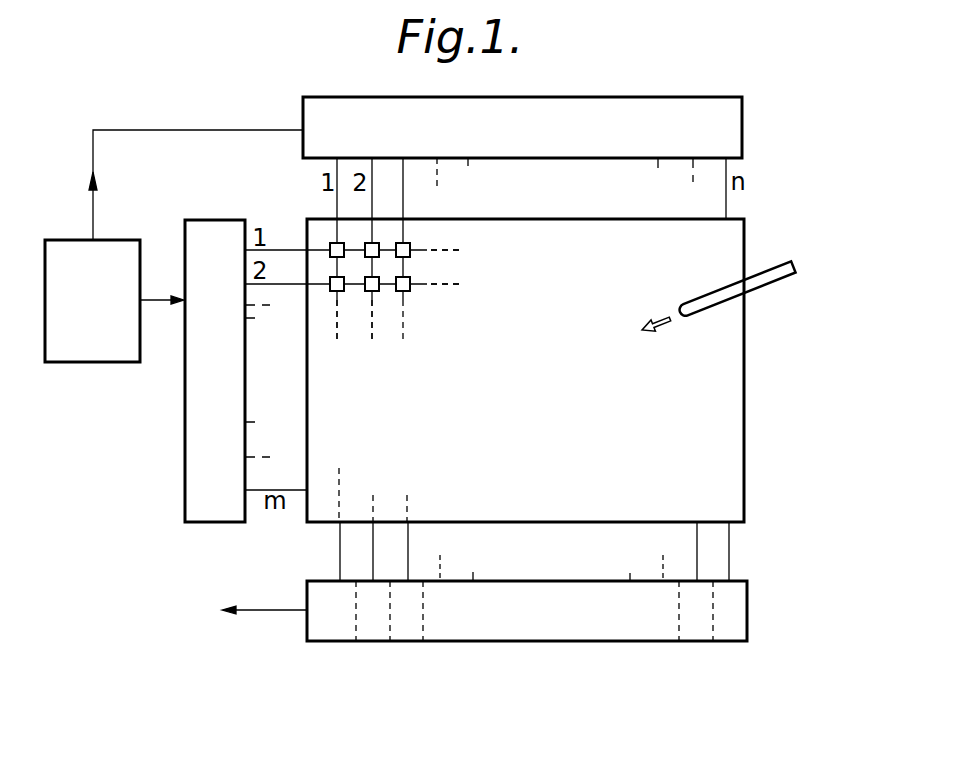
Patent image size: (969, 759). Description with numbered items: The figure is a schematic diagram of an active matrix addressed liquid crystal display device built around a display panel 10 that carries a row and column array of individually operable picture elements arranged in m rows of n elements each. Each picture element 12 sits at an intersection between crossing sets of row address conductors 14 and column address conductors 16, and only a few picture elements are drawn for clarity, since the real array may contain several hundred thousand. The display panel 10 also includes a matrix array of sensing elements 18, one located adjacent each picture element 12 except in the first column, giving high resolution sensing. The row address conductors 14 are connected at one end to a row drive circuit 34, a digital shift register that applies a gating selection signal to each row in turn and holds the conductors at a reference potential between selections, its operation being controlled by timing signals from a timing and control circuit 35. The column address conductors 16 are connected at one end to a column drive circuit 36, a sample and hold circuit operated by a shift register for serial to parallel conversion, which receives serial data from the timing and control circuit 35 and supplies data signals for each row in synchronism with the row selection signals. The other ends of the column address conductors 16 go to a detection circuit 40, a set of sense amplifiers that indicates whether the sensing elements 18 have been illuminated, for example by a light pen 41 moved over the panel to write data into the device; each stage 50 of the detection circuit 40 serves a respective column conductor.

The display panel 10 is at (737, 500).
The picture element 12 is at (334, 243).
The row address conductor 14 is at (428, 246).
The column address conductor 16 is at (338, 303).
The sensing element 18 is at (408, 244).
The row drive circuit 34 is at (195, 472).
The timing and control circuit 35 is at (113, 348).
The column drive circuit 36 is at (638, 106).
The detection circuit 40 is at (697, 642).
The light pen 41 is at (782, 283).
The stage of the detection circuit 50 is at (347, 641).